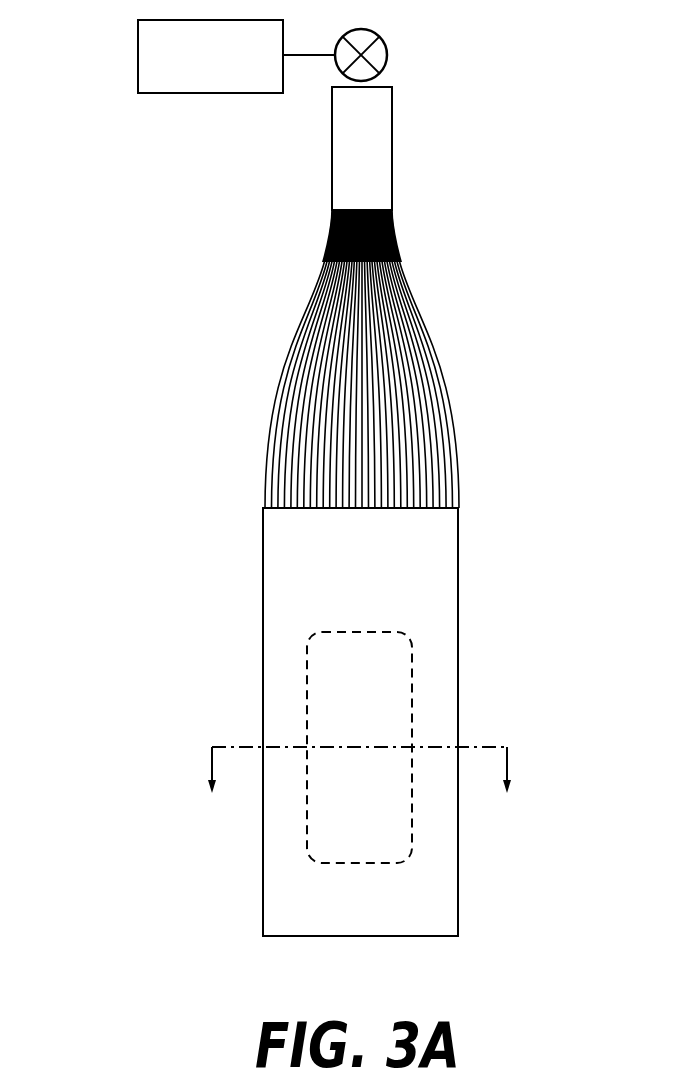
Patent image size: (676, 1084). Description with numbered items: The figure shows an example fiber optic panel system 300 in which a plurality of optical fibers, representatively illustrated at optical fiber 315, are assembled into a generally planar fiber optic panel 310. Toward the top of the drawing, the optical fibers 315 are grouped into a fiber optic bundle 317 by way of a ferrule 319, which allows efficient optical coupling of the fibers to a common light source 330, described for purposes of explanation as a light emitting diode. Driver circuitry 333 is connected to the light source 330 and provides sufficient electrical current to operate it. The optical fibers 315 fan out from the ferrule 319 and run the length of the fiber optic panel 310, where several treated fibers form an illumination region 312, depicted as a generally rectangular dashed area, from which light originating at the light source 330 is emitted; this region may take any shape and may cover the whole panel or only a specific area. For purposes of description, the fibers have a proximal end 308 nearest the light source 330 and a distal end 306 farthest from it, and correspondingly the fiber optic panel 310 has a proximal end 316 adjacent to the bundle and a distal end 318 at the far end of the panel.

The fiber optic panel system 300 is at (110, 204).
The distal end of optical fibers 306 is at (266, 937).
The proximal end of optical fibers 308 is at (383, 86).
The fiber optic panel 310 is at (458, 570).
The illumination region 312 is at (412, 703).
The optical fiber 315 is at (443, 397).
The proximal end of fiber optic panel 316 is at (263, 508).
The fiber optic bundle 317 is at (410, 225).
The distal end of fiber optic panel 318 is at (456, 937).
The ferrule 319 is at (392, 147).
The light source 330 is at (387, 50).
The driver circuitry 333 is at (202, 93).